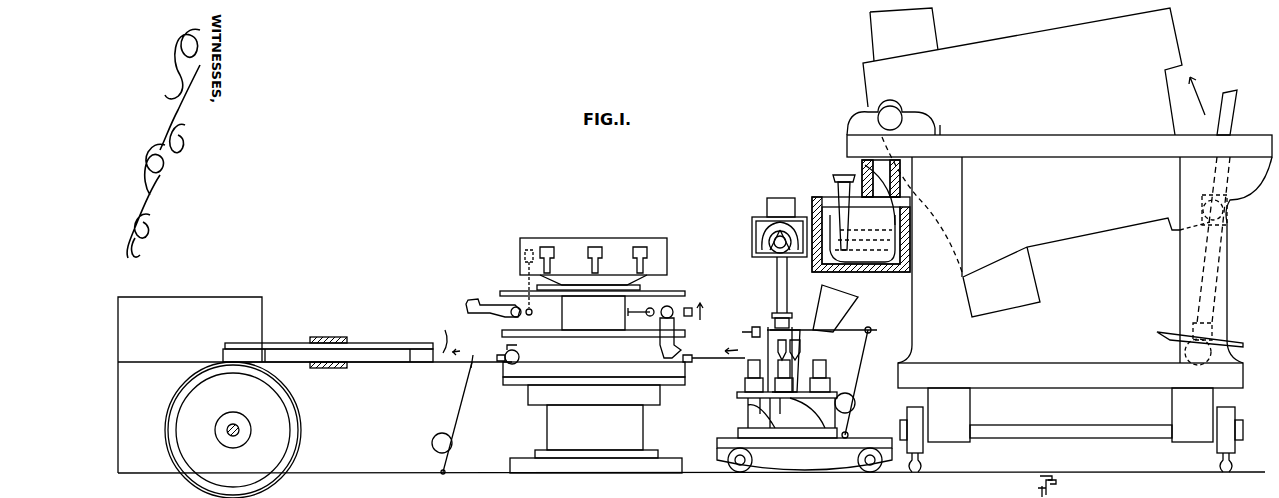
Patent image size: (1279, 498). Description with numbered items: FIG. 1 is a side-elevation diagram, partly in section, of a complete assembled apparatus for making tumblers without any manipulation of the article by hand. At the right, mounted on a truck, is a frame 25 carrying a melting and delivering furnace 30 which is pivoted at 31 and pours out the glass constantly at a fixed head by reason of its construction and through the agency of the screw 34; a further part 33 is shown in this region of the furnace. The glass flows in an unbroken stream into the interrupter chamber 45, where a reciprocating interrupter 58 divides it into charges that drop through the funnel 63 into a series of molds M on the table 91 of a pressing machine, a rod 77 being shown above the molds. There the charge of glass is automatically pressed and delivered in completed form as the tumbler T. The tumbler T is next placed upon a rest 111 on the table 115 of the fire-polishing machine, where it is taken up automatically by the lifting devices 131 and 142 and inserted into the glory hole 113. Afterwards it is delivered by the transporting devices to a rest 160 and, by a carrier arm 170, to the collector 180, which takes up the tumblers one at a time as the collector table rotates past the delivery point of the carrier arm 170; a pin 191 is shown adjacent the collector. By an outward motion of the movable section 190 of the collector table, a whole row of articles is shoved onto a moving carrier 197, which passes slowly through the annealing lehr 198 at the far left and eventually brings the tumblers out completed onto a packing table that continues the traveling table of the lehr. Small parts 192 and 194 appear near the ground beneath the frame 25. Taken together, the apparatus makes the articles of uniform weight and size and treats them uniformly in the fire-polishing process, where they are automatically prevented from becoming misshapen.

The frame 25 is at (1070, 417).
The melting and delivering furnace 30 is at (1022, 71).
The pivot 31 is at (898, 110).
The bearing 33 is at (1200, 205).
The screw 34 is at (1231, 95).
The interrupter chamber 45 is at (812, 200).
The reciprocating interrupter 58 is at (838, 175).
The funnel 63 is at (848, 316).
The plunger rod 77 is at (777, 290).
The table 91 is at (852, 408).
The rest 111 is at (690, 362).
The glory hole 113 is at (652, 255).
The table 115 is at (588, 338).
The lifting device 131 is at (486, 300).
The lifting device 142 is at (692, 308).
The rest 160 is at (504, 355).
The carrier arm 170 is at (521, 357).
The collector 180 is at (376, 343).
The movable section 190 is at (406, 370).
The pin 191 is at (436, 330).
The bracket 192 is at (1068, 496).
The rod 194 is at (1060, 478).
The moving carrier 197 is at (170, 361).
The annealing lehr 198 is at (190, 385).
The tumbler T is at (755, 340).
The molds M is at (827, 367).